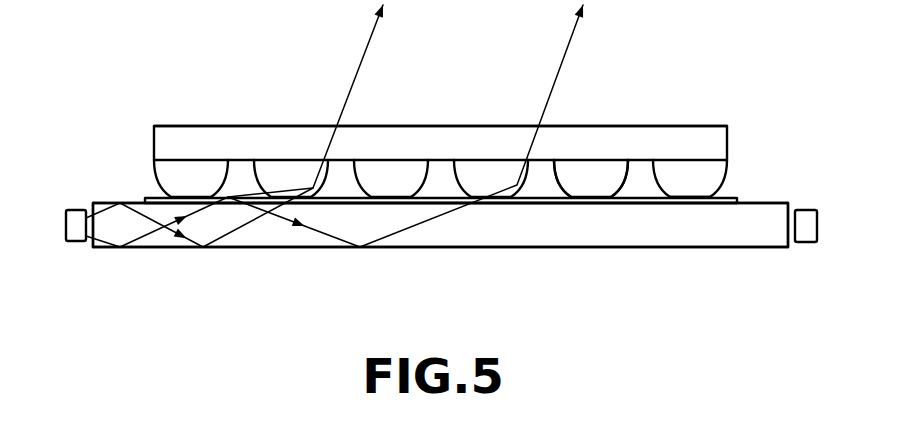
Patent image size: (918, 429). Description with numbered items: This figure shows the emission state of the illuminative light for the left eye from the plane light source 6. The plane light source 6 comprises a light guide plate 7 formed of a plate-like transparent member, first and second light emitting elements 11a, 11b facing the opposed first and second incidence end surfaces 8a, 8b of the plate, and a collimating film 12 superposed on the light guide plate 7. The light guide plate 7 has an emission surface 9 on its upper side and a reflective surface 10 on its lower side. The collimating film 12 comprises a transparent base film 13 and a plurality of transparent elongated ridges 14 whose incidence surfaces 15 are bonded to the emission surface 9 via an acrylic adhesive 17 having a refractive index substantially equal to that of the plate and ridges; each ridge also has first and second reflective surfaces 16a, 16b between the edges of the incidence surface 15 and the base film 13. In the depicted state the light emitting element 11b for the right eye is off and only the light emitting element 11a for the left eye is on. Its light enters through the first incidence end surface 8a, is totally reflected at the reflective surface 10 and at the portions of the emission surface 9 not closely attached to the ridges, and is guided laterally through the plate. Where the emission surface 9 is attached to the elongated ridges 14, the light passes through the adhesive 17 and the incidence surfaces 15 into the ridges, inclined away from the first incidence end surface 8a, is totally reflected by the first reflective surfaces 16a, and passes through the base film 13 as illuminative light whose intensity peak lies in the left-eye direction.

The plane light source 6 is at (430, 162).
The light guide plate 7 is at (737, 228).
The first incidence end surface 8a is at (91, 203).
The second incidence end surface 8b is at (791, 208).
The emission surface 9 is at (418, 206).
The reflective surface 10 is at (288, 248).
The first light emitting element 11a is at (73, 226).
The second light emitting element 11b is at (805, 228).
The collimating film 12 is at (681, 118).
The transparent base film 13 is at (708, 143).
The elongated ridge 14 is at (283, 178).
The incidence surface 15 is at (595, 201).
The first reflective surface 16a is at (633, 184).
The second reflective surface 16b is at (562, 183).
The acrylic adhesive 17 is at (723, 190).